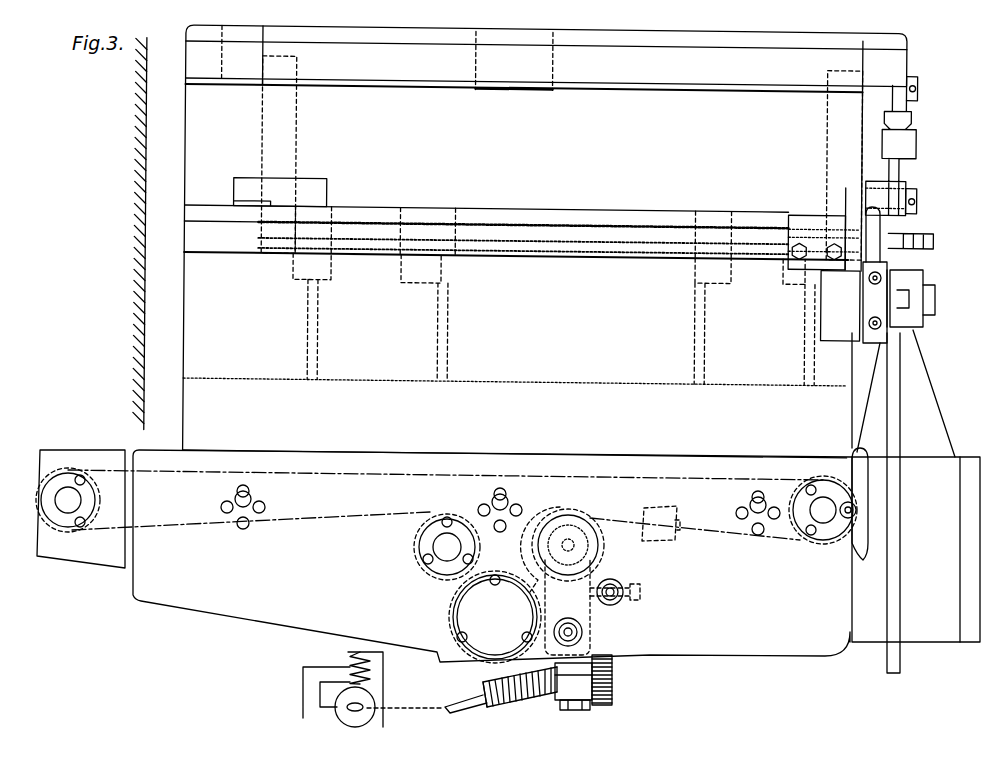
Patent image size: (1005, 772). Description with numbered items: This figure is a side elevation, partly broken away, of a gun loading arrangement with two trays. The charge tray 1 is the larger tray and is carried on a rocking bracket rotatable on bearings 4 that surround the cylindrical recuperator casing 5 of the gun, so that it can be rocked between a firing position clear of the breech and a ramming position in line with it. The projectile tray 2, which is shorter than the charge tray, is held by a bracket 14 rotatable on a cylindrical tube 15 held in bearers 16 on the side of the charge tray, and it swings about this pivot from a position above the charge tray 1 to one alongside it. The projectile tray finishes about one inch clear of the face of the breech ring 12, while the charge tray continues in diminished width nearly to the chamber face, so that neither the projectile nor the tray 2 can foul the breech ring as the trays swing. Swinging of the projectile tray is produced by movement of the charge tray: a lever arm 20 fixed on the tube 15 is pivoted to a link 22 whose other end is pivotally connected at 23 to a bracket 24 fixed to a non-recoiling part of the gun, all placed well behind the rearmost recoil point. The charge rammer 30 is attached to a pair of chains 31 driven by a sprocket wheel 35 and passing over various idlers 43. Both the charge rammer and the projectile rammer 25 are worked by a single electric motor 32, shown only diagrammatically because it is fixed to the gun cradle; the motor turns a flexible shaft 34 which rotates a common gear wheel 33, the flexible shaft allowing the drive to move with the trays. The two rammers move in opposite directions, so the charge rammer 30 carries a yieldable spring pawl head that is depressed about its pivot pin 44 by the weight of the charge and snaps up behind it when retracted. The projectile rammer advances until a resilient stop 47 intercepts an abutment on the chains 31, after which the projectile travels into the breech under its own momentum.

The charge tray 1 is at (617, 372).
The projectile tray 2 is at (550, 242).
The bearings 4 is at (823, 565).
The recuperator casing 5 is at (758, 558).
The breech ring 12 is at (148, 182).
The bracket 14 is at (298, 170).
The cylindrical tube 15 is at (628, 254).
The bearers 16 is at (403, 281).
The lever arm 20 is at (835, 316).
The link 22 is at (866, 346).
The pivotal connection 23 is at (911, 298).
The bracket 24 is at (903, 501).
The projectile rammer 25 is at (325, 196).
The charge rammer 30 is at (866, 535).
The chains 31 is at (388, 512).
The electric motor 32 is at (335, 730).
The gear wheel 33 is at (604, 706).
The flexible shaft 34 is at (455, 701).
The sprocket wheel 35 is at (452, 612).
The idlers 43 is at (78, 527).
The pivot pin 44 is at (852, 505).
The resilient stop 47 is at (668, 509).